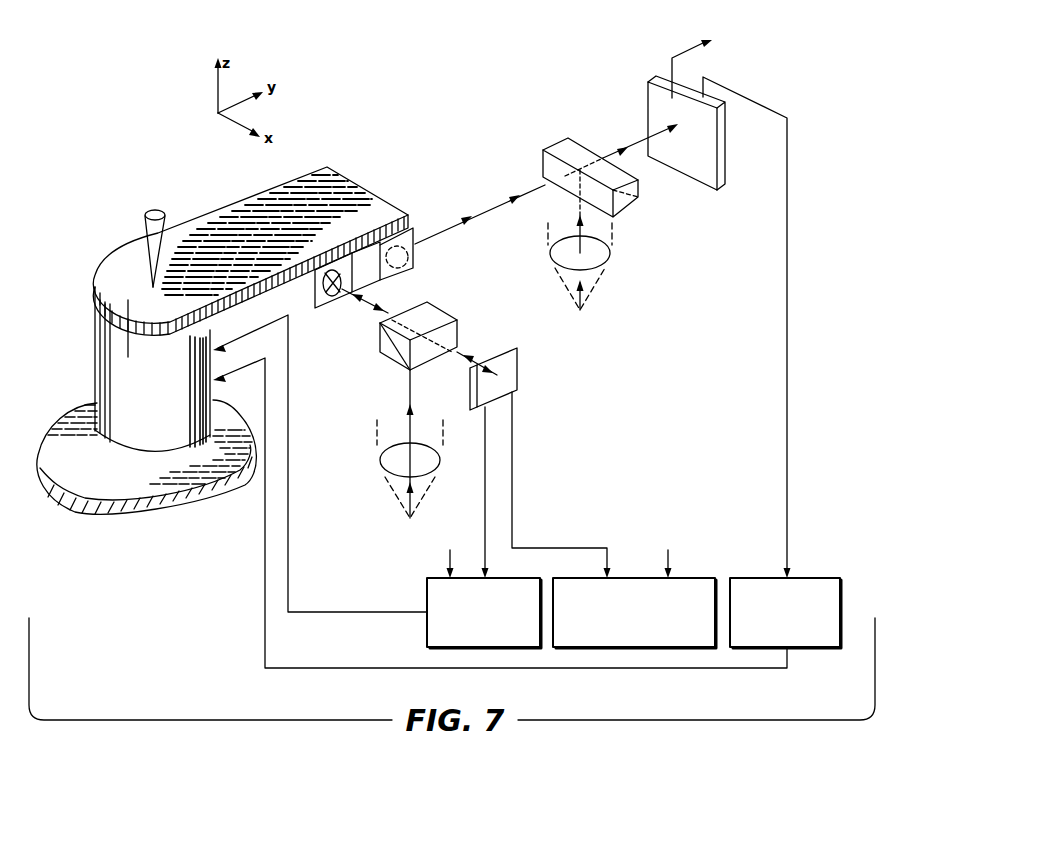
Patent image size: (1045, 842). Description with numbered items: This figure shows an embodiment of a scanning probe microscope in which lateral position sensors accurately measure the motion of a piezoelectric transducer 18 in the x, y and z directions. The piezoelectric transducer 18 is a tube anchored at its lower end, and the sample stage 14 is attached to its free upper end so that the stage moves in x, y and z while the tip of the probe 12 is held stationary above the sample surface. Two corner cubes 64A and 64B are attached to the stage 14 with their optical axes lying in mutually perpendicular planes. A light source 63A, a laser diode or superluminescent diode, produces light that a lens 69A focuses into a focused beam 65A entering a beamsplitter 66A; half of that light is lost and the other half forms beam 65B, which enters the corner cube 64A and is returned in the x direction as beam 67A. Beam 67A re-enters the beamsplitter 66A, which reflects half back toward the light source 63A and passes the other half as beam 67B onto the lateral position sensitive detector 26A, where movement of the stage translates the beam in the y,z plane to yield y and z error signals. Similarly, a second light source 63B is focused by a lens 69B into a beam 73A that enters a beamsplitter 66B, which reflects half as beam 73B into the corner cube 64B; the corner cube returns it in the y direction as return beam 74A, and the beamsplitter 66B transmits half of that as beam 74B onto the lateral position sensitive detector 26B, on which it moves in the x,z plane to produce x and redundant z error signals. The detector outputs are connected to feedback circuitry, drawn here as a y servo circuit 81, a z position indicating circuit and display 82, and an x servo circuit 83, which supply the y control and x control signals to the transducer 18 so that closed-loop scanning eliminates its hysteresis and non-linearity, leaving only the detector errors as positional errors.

The probe 12 is at (158, 210).
The sample stage 14 is at (237, 294).
The piezoelectric transducer 18 is at (96, 353).
The lateral position sensitive detector 26A is at (518, 376).
The lateral position sensitive detector 26B is at (700, 174).
The light source 63A is at (407, 519).
The second light source 63B is at (583, 309).
The corner cube 64A is at (336, 298).
The corner cube 64B is at (408, 247).
The focused beam 65A is at (408, 410).
The beam 65B is at (360, 300).
The beamsplitter 66A is at (380, 342).
The beamsplitter 66B is at (560, 145).
The beam 67A is at (383, 308).
The beam 67B is at (470, 350).
The lens 69A is at (392, 480).
The lens 69B is at (600, 262).
The beam 73A is at (578, 220).
The beam 73B is at (468, 218).
The return beam 74A is at (514, 200).
The beam 74B is at (623, 149).
The y servo circuit 81 is at (432, 578).
The z position indicating circuit/display 82 is at (593, 578).
The x servo circuit 83 is at (763, 578).